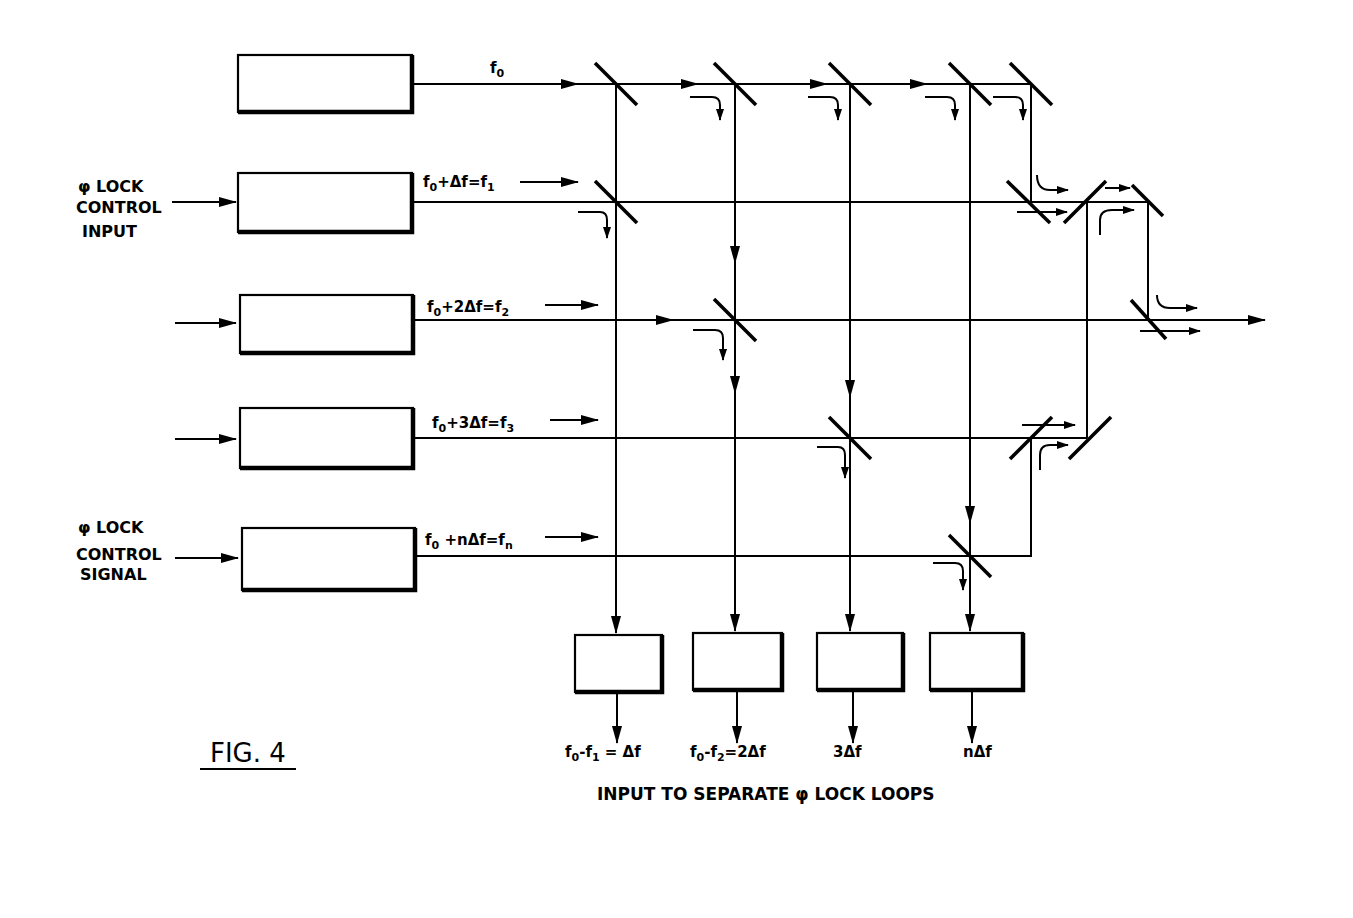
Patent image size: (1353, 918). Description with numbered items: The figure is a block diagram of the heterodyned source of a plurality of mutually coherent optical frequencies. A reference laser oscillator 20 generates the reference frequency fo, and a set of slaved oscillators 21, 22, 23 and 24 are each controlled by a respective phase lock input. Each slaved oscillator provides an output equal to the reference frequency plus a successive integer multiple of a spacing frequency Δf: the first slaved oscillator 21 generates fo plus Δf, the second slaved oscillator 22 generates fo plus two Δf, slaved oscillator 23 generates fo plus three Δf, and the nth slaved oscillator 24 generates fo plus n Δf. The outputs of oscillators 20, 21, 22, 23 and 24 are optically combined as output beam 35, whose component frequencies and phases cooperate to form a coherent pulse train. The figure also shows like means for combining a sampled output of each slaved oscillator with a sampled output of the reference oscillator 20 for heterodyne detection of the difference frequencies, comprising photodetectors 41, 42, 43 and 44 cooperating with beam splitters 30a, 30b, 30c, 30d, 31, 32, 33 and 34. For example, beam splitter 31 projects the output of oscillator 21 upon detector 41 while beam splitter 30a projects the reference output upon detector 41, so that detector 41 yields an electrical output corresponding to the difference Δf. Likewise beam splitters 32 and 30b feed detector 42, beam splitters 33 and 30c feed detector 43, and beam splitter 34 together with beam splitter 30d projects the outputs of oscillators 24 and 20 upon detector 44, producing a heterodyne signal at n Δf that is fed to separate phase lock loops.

The reference laser oscillator 20 is at (393, 73).
The first slaved oscillator 21 is at (383, 197).
The second slaved oscillator 22 is at (390, 318).
The slaved oscillator 23 is at (383, 440).
The nth slaved oscillator 24 is at (385, 565).
The beam splitter 30a is at (607, 73).
The beam splitter 30b is at (723, 70).
The beam splitter 30c is at (832, 68).
The beam splitter 30d is at (957, 68).
The beam splitter 31 is at (625, 212).
The beam splitter 32 is at (745, 330).
The beam splitter 33 is at (868, 447).
The beam splitter 34 is at (988, 562).
The output beam 35 is at (1222, 316).
The photodetector 41 is at (646, 652).
The photodetector 42 is at (748, 647).
The photodetector 43 is at (868, 647).
The photodetector 44 is at (998, 647).